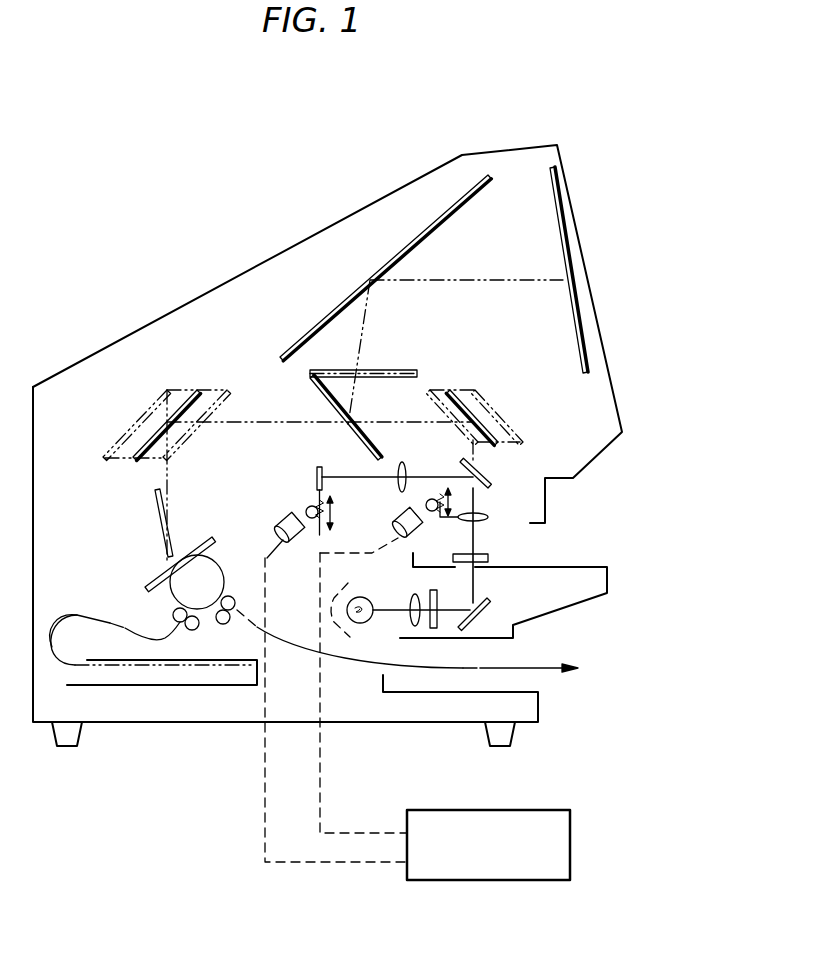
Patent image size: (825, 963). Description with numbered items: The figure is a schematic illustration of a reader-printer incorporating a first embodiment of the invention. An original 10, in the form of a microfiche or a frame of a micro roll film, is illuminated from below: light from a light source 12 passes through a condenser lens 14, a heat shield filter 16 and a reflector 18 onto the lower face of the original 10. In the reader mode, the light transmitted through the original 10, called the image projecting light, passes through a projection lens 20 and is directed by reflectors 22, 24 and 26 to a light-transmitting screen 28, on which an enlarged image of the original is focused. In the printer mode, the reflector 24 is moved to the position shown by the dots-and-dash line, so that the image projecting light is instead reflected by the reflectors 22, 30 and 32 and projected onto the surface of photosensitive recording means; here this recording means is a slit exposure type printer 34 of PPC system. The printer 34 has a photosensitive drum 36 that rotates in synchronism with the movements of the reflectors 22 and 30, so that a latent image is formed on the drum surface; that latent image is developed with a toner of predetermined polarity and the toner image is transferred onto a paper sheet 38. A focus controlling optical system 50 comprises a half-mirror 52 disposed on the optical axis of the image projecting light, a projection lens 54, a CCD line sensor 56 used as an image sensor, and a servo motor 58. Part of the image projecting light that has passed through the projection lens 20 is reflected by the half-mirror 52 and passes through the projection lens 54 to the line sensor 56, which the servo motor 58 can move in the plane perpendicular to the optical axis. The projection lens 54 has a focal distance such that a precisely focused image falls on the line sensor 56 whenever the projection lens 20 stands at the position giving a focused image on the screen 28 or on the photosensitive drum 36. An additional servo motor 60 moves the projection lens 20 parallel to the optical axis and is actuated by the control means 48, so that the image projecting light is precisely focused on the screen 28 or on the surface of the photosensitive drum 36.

The original 10 is at (490, 558).
The light source 12 is at (370, 600).
The condenser lens 14 is at (411, 624).
The heat shield filter 16 is at (437, 626).
The reflector 18 is at (490, 608).
The projection lens 20 is at (486, 521).
The reflector 22 is at (460, 390).
The reflector 24 is at (310, 387).
The reflector 26 is at (333, 309).
The light-transmitting screen 28 is at (570, 253).
The reflector 30 is at (183, 390).
The reflector 32 is at (155, 500).
The slit exposure type printer 34 is at (123, 590).
The photosensitive drum 36 is at (175, 597).
The paper sheet 38 is at (255, 628).
The control means 48 is at (535, 880).
The focus controlling optical system 50 is at (308, 445).
The half-mirror 52 is at (488, 480).
The projection lens 54 is at (413, 453).
The CCD line sensor 56 is at (317, 470).
The servo motor 58 is at (283, 517).
The servo motor 60 is at (400, 545).